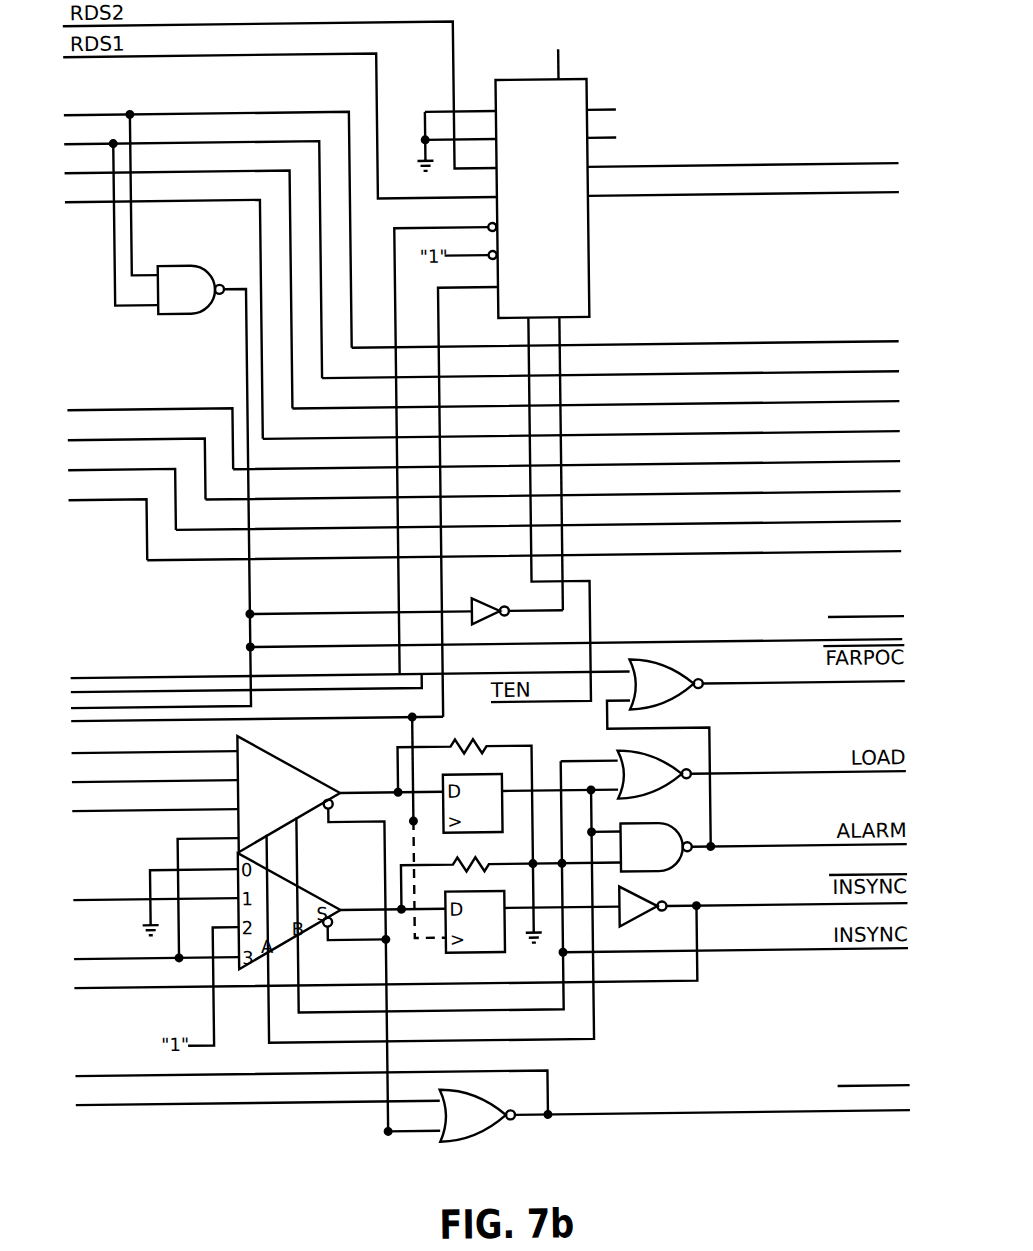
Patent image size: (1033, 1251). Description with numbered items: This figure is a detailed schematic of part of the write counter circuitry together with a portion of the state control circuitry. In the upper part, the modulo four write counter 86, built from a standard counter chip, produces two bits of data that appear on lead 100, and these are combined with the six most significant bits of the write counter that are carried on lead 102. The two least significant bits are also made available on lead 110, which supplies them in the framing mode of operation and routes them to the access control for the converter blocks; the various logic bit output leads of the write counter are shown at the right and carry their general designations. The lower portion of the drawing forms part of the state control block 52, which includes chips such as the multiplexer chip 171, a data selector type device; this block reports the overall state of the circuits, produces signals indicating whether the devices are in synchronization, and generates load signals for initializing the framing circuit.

The modulo 4 write counter 86 is at (626, 243).
The lead 100 is at (791, 228).
The lead 102 is at (786, 320).
The lead 110 is at (796, 572).
The chip 171 is at (295, 766).
The state control block 52 is at (732, 1060).